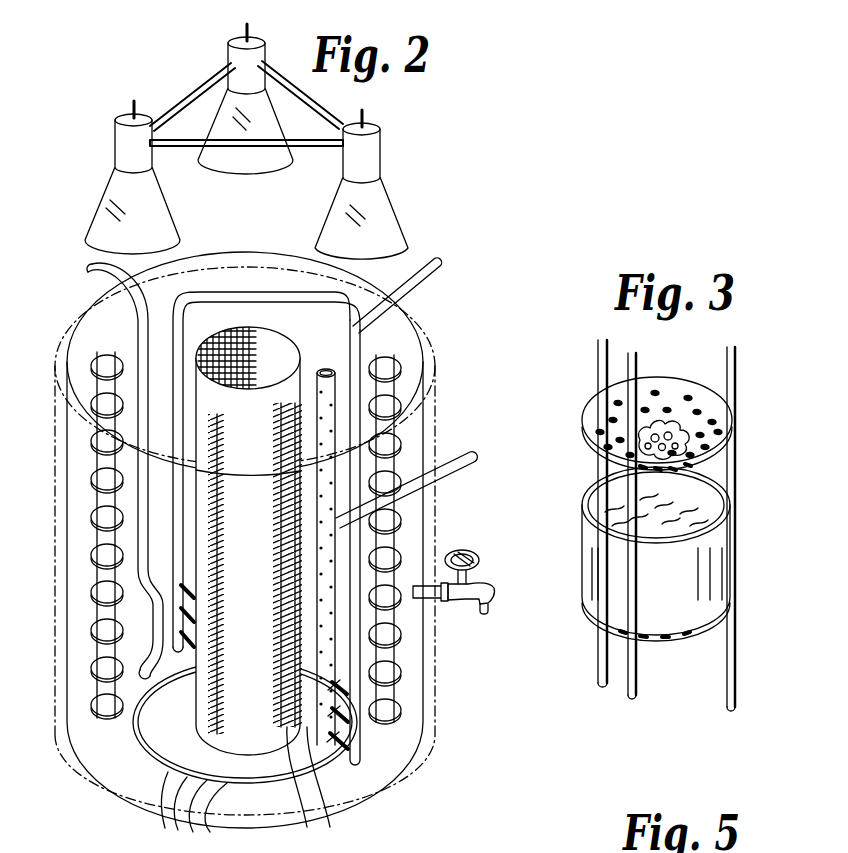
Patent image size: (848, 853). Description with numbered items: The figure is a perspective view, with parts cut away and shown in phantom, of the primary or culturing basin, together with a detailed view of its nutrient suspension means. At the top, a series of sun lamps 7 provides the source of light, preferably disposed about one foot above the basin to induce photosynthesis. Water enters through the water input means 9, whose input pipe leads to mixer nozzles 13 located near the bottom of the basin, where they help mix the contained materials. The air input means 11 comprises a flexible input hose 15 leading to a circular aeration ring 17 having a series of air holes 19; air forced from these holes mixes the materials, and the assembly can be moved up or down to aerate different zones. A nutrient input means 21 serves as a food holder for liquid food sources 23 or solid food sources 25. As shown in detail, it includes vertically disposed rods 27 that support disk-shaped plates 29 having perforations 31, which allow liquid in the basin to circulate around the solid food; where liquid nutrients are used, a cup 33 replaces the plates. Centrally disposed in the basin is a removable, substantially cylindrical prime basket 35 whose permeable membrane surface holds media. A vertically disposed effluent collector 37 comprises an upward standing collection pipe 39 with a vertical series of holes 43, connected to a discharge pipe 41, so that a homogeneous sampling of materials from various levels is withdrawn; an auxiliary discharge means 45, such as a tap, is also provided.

In FIG. 2, the sun lamps 7 is at (340, 221).
In FIG. 2, the water input means 9 is at (440, 262).
In FIG. 2, the air input means 11 is at (126, 318).
In FIG. 2, the mixer nozzles 13 is at (349, 690).
In FIG. 2, the flexible input hose 15 is at (60, 383).
In FIG. 2, the aeration ring 17 is at (151, 764).
In FIG. 2, the air holes 19 is at (210, 833).
In FIG. 2, the nutrient input means 21 is at (82, 525).
In FIG. 3, the liquid food sources 23 is at (701, 501).
In FIG. 3, the solid food sources 25 is at (700, 413).
In FIG. 3, the rods 27 is at (607, 677).
In FIG. 2, the plates 29 is at (97, 707).
In FIG. 3, the plates 29 is at (678, 388).
In FIG. 3, the perforations 31 is at (611, 447).
In FIG. 3, the cup 33 is at (713, 570).
In FIG. 2, the prime basket 35 is at (237, 316).
In FIG. 2, the effluent collector 37 is at (338, 380).
In FIG. 2, the collection pipe 39 is at (340, 770).
In FIG. 2, the discharge pipe 41 is at (450, 463).
In FIG. 2, the holes 43 is at (330, 828).
In FIG. 2, the auxiliary discharge means 45 is at (468, 605).